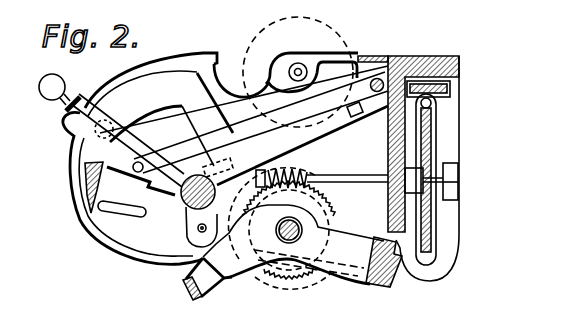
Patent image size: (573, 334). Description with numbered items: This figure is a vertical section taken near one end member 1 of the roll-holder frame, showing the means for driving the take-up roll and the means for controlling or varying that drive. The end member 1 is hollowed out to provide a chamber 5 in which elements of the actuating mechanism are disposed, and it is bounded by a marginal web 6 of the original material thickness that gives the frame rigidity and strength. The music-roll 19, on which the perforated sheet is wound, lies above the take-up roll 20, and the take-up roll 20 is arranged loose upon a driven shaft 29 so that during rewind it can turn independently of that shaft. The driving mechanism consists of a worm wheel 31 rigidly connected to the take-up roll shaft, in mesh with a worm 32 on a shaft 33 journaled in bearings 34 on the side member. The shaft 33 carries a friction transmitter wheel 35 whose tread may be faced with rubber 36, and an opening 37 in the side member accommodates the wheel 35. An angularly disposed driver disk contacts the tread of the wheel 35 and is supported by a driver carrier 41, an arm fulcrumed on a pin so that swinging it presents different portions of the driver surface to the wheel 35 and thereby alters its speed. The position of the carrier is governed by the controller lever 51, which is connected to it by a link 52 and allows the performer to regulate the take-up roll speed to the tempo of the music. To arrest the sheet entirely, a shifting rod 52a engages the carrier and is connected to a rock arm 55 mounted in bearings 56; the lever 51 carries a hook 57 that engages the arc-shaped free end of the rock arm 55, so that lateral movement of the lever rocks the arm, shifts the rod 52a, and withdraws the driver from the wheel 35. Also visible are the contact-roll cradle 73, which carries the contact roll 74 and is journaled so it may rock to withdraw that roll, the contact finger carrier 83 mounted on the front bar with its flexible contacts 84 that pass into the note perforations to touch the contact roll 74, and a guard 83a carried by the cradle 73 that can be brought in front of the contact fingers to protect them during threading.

The end member 1 is at (202, 51).
The marginal web 6 is at (216, 82).
The music-roll 19 is at (351, 46).
The shifting rod 52a is at (392, 60).
The driver carrier 41 is at (450, 84).
The opening 37 is at (432, 103).
The friction transmitter wheel 35 is at (434, 132).
The bearing 34 is at (213, 200).
The rubber facing 36 is at (433, 263).
The take-up roll 20 is at (342, 211).
The driven shaft 29 is at (289, 240).
The contact-roll cradle 73 is at (243, 279).
The guard 83a is at (198, 297).
The contact roll 74 is at (187, 208).
The contacts 84 is at (141, 183).
The contact finger carrier 83 is at (85, 181).
The controller lever 51 is at (57, 106).
The hook 57 is at (119, 138).
The link 52 is at (180, 153).
The rock arm 55 is at (160, 102).
The bearing 56 is at (244, 167).
The worm 32 is at (290, 172).
The chamber 5 is at (333, 167).
The worm wheel 31 is at (317, 187).
The shaft 33 is at (348, 177).